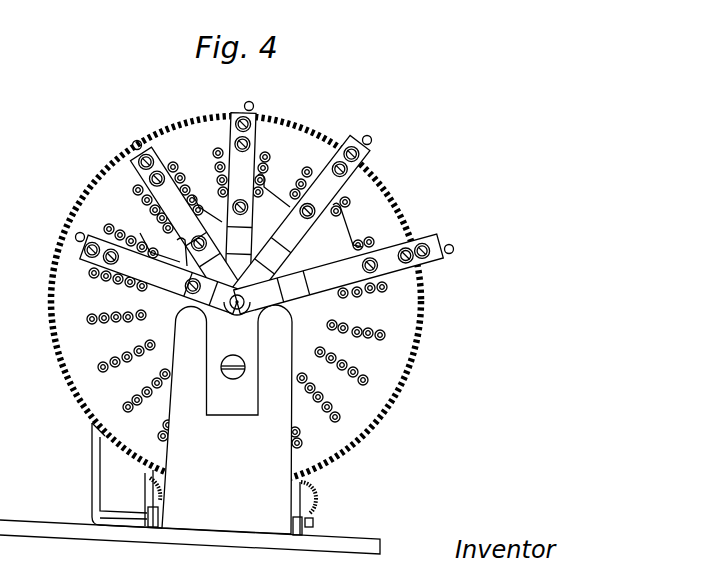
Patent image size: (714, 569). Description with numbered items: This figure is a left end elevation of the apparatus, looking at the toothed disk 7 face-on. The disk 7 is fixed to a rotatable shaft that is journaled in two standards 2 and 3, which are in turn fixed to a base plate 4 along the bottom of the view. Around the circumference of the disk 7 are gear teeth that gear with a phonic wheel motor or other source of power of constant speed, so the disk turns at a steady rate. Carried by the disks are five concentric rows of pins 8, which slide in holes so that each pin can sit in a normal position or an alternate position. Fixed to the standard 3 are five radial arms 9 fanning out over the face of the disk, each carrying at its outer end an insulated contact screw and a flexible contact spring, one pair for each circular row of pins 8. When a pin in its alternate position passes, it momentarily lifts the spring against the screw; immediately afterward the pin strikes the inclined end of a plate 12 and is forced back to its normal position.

The standard 2 is at (388, 287).
The standard 3 is at (293, 465).
The base plate 4 is at (345, 538).
The disk 7 is at (375, 435).
The pins 8 is at (367, 380).
The radial arms 9 is at (157, 155).
The plate 12 is at (140, 233).